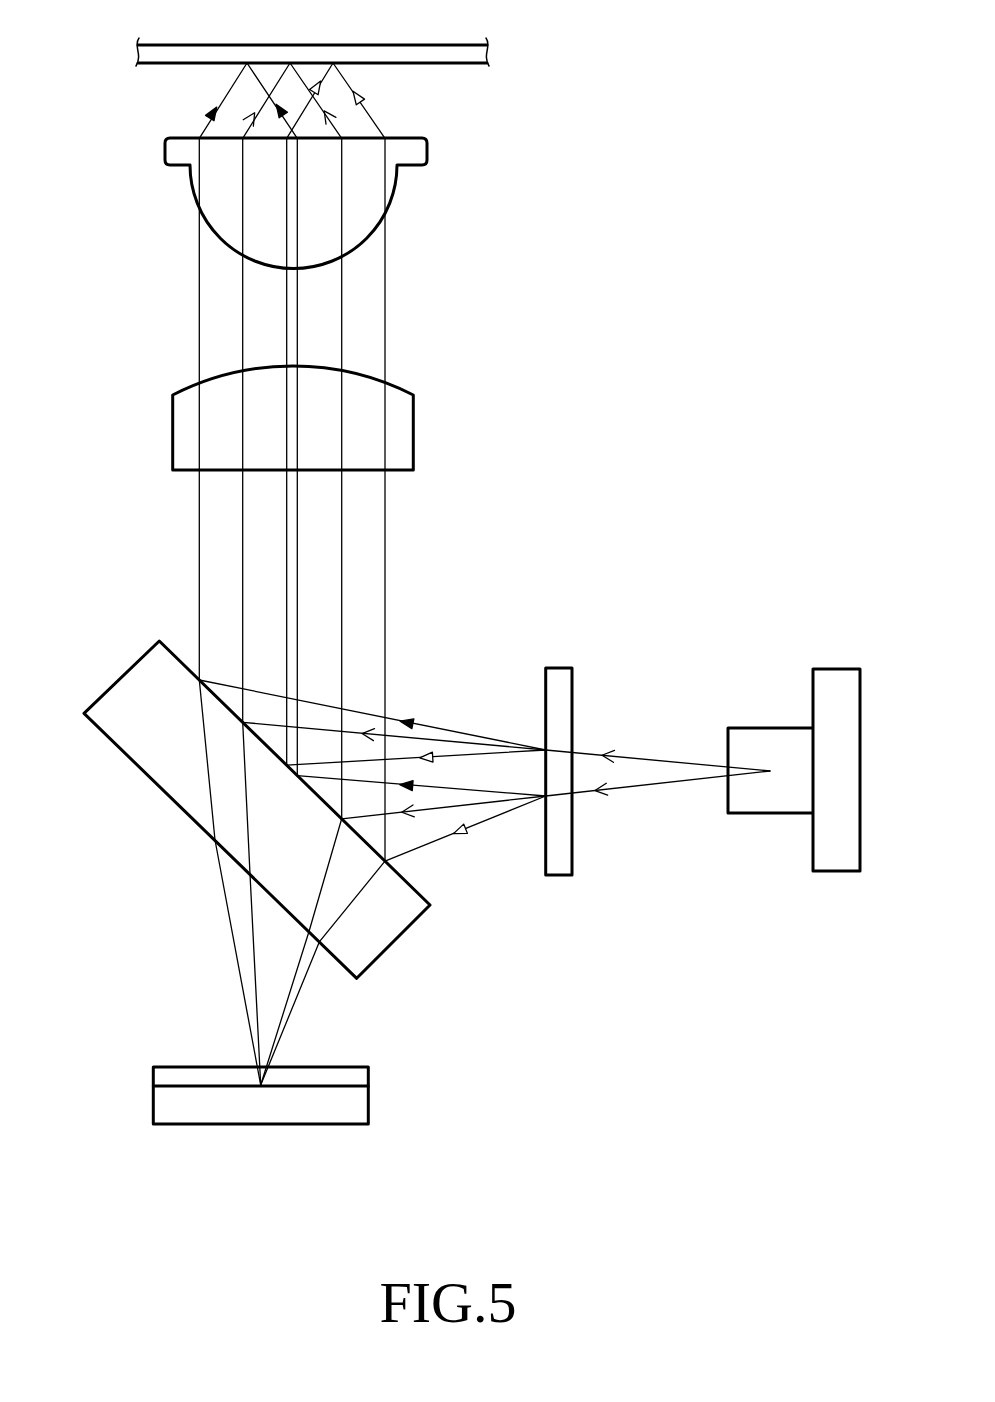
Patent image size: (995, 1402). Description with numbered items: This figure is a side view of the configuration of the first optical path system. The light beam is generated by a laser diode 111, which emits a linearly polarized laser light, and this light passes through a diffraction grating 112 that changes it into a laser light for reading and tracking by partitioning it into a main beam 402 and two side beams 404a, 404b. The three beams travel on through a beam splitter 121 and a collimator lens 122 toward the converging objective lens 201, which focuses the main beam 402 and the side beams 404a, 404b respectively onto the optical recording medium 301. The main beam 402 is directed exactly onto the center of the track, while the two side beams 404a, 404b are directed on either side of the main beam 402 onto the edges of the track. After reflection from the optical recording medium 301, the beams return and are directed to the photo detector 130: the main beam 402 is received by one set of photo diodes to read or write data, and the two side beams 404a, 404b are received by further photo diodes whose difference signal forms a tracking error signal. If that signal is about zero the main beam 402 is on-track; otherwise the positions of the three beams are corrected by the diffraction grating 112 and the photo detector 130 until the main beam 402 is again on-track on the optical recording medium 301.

The optical recording medium 301 is at (480, 52).
The side beam 404a is at (247, 63).
The main beam 402 is at (290, 63).
The side beam 404b is at (333, 63).
The objective lens 201 is at (397, 182).
The collimator lens 122 is at (400, 427).
The beam splitter 121 is at (118, 677).
The diffraction grating 112 is at (562, 702).
The laser diode 111 is at (780, 728).
The photo detector 130 is at (358, 1105).